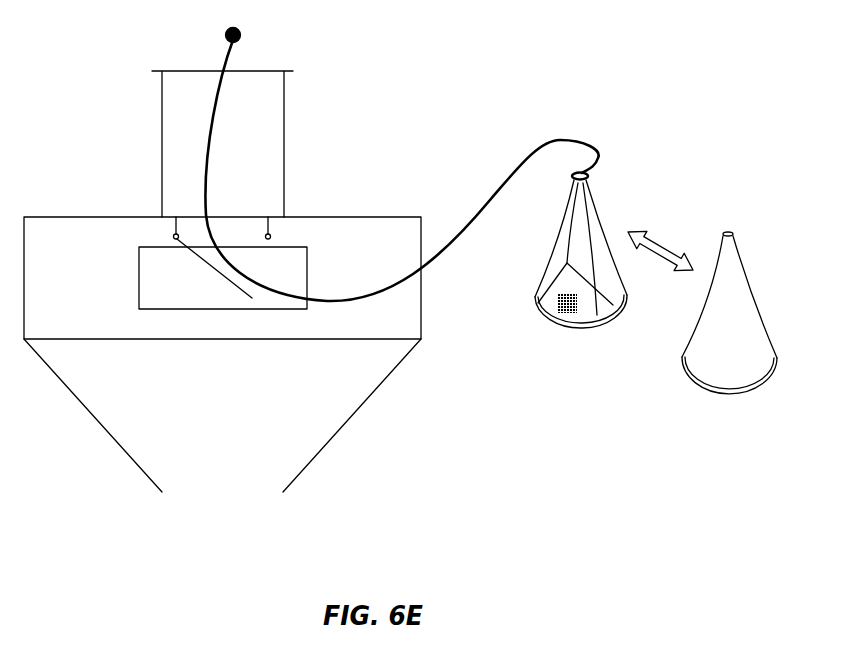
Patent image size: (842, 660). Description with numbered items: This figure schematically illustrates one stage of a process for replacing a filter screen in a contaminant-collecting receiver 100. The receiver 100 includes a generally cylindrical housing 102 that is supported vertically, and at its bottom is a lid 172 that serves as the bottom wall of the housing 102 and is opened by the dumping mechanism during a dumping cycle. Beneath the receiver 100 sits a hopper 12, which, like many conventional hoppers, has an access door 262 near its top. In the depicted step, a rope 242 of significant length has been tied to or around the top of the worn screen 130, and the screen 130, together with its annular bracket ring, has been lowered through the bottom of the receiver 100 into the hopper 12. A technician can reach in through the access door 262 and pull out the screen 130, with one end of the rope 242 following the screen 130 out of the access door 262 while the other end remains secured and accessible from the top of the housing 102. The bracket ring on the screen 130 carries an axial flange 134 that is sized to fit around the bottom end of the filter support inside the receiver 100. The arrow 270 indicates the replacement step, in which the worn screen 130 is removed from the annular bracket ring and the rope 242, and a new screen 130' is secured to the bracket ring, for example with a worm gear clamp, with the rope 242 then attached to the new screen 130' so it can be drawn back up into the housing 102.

The hopper 12 is at (423, 327).
The receiver 100 is at (235, 123).
The housing 102 is at (284, 103).
The access door 262 is at (310, 270).
The lid 172 is at (209, 267).
The rope 242 is at (500, 180).
The screen 130 is at (596, 270).
The axial flange 134 is at (582, 328).
The arrow indicating screen replacement step 270 is at (667, 243).
The new screen 130' is at (751, 313).